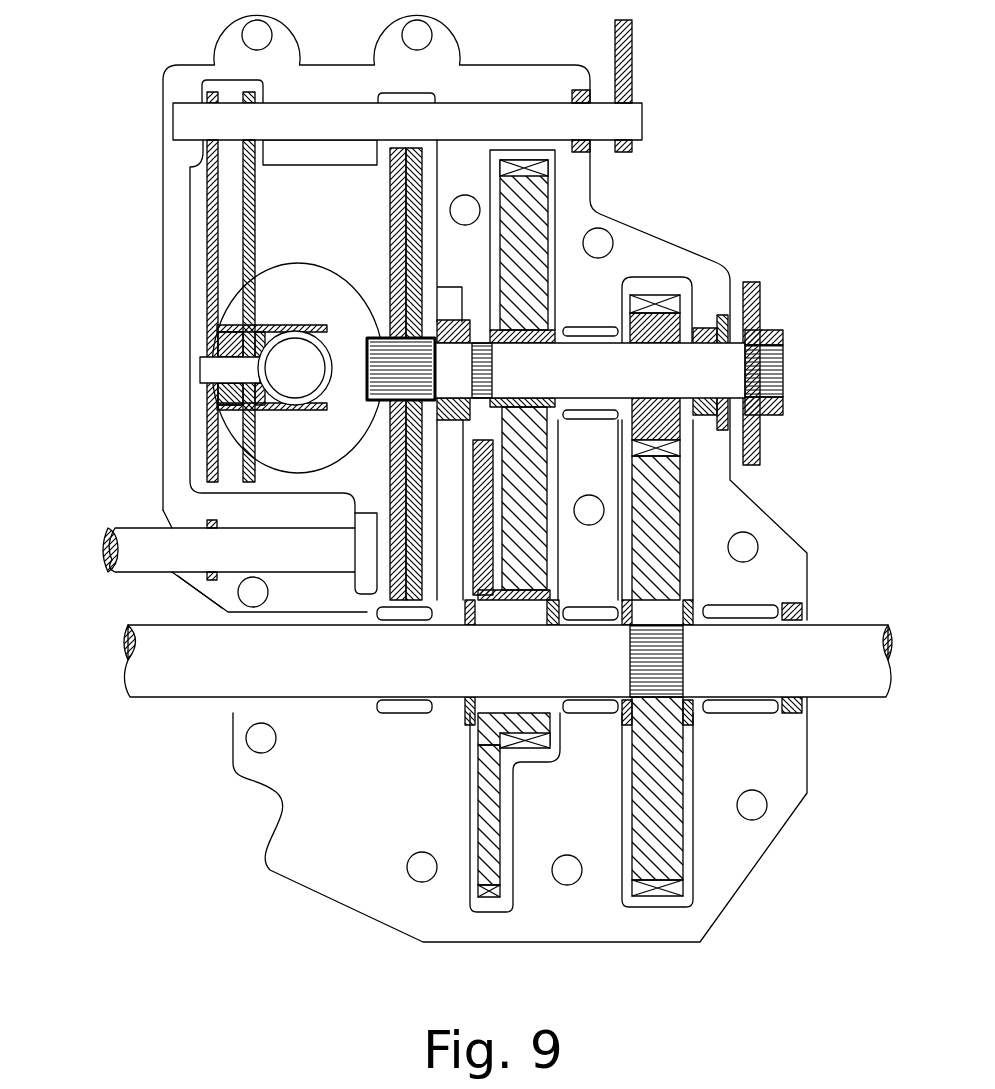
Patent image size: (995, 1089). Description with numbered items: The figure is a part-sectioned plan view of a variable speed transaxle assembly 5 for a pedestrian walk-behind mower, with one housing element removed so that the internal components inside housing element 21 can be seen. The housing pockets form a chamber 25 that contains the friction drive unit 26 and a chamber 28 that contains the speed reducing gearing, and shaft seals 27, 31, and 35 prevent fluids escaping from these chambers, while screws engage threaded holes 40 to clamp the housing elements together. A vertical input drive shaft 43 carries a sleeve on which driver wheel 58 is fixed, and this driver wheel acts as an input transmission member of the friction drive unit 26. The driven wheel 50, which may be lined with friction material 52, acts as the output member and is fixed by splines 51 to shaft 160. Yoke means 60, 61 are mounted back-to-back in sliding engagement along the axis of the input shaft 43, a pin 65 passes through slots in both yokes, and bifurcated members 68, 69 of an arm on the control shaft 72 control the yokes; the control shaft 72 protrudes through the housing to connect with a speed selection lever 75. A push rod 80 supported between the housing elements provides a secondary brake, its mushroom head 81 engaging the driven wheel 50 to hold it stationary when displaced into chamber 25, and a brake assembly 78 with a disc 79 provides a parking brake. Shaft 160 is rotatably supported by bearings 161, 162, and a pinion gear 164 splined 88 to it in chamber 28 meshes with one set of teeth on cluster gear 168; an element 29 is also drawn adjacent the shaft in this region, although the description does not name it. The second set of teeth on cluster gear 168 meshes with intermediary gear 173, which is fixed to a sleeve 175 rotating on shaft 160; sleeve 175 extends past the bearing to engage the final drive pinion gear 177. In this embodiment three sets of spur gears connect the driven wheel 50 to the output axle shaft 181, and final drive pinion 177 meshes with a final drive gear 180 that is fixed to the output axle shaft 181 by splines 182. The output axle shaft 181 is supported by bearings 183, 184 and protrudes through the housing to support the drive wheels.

The transaxle assembly 5 is at (733, 45).
The housing element 21 is at (467, 85).
The chamber 25 is at (316, 244).
The friction drive unit 26 is at (125, 152).
The shaft seal 27 is at (215, 572).
The chamber 28 is at (530, 760).
The hub 29 is at (440, 325).
The shaft seal 31 is at (578, 92).
The shaft seal 35 is at (795, 605).
The threaded hole 40 is at (253, 35).
The input drive shaft 43 is at (306, 380).
The driven wheel 50 is at (422, 165).
The splines 51 is at (420, 381).
The friction material 52 is at (395, 200).
The driver wheel 58 is at (308, 302).
The yoke means 60 is at (218, 328).
The yoke means 61 is at (318, 410).
The pin 65 is at (210, 370).
The bifurcated member 68 is at (212, 243).
The bifurcated member 69 is at (250, 210).
The control shaft 72 is at (333, 118).
The speed selection lever 75 is at (627, 55).
The brake assembly 78 is at (797, 438).
The disc 79 is at (758, 300).
The push rod 80 is at (143, 545).
The mushroom head 81 is at (365, 525).
The splines 88 is at (545, 320).
The shaft 160 is at (664, 382).
The bearing 161 is at (590, 422).
The bearing 162 is at (718, 330).
The pinion gear 164 is at (547, 285).
The cluster gear 168 is at (487, 760).
The intermediary gear 173 is at (527, 500).
The sleeve 175 is at (496, 346).
The final drive pinion gear 177 is at (670, 300).
The final drive gear 180 is at (660, 800).
The output axle shaft 181 is at (496, 664).
The splines 182 is at (660, 660).
The bearing 183 is at (410, 714).
The bearing 184 is at (735, 708).